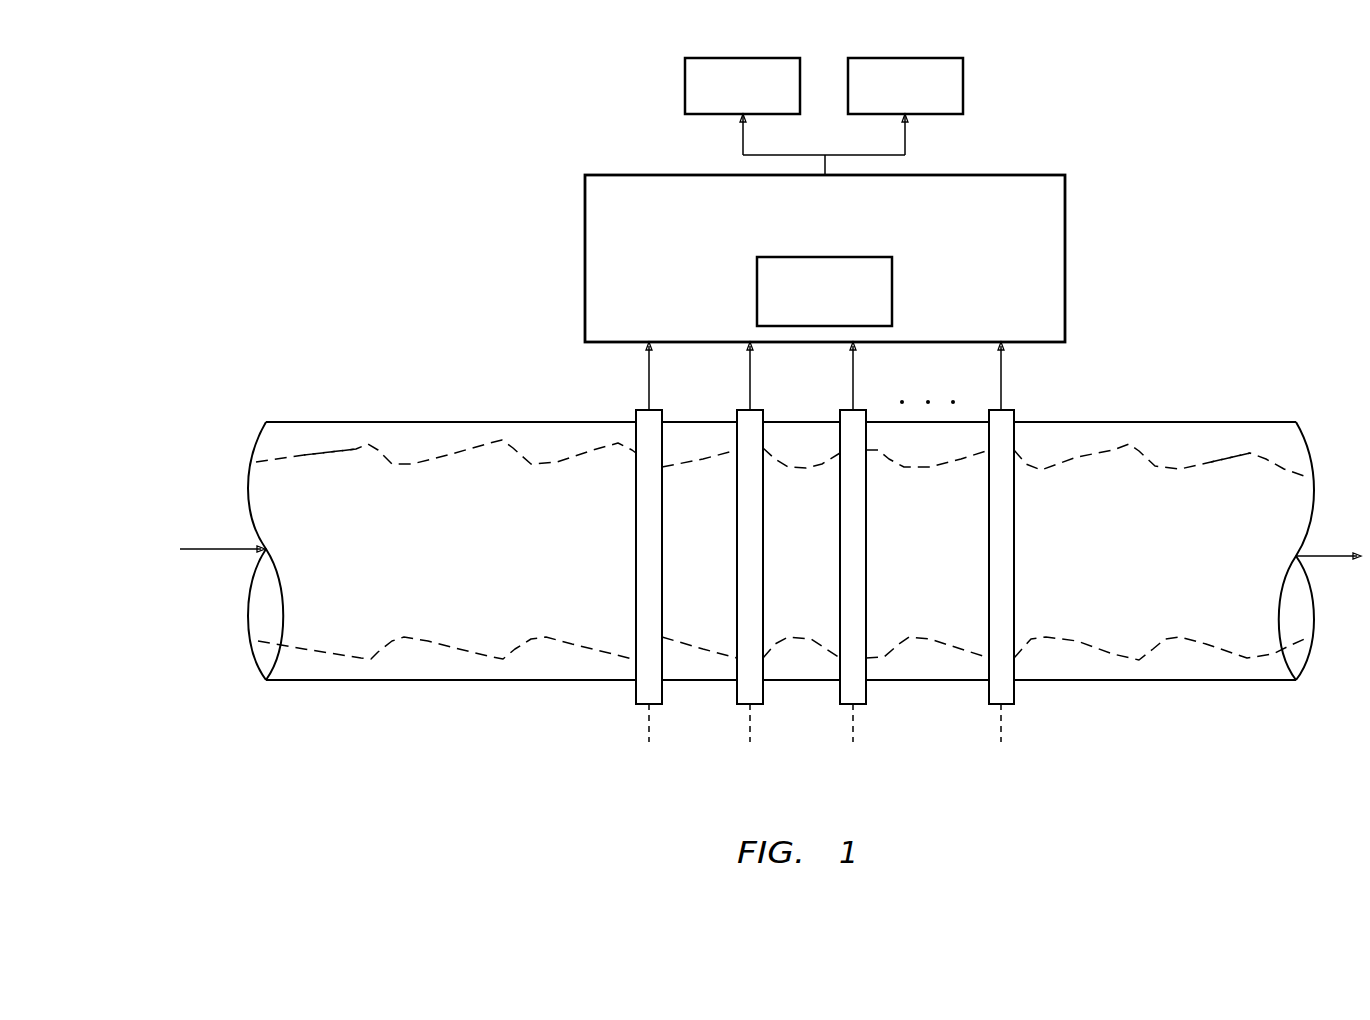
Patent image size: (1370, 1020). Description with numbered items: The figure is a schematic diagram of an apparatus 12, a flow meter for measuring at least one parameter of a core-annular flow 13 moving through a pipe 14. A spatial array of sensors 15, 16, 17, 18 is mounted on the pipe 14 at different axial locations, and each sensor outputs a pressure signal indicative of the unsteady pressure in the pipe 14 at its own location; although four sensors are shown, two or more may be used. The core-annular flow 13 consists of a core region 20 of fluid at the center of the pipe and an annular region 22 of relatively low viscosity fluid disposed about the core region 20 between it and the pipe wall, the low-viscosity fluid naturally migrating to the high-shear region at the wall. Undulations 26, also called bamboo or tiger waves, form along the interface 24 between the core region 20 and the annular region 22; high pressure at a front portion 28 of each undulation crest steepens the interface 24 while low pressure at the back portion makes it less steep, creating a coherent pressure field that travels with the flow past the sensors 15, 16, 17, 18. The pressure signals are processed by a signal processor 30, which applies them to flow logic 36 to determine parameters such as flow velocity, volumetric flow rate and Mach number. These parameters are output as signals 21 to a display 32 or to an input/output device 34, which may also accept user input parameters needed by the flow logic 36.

The apparatus 12 is at (1193, 164).
The core-annular flow 13 is at (222, 548).
The pipe 14 is at (1196, 422).
The sensor 15 is at (636, 694).
The sensor 16 is at (737, 694).
The sensor 17 is at (866, 694).
The sensor 18 is at (1014, 696).
The core region 20 is at (1265, 519).
The signals 21 is at (743, 138).
The annular region 22 is at (1281, 443).
The interface 24 is at (1250, 450).
The undulations 26 is at (368, 441).
The front portion of undulation crest 28 is at (330, 450).
The signal processor 30 is at (1065, 223).
The display 32 is at (963, 95).
The input/output device 34 is at (685, 95).
The flow logic 36 is at (892, 300).